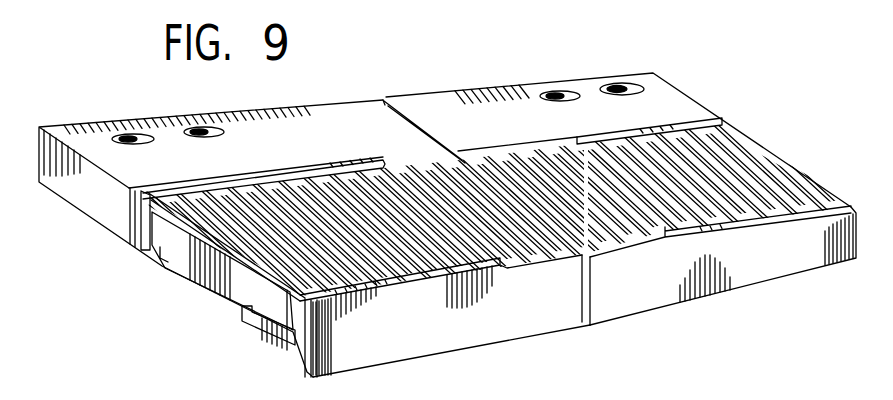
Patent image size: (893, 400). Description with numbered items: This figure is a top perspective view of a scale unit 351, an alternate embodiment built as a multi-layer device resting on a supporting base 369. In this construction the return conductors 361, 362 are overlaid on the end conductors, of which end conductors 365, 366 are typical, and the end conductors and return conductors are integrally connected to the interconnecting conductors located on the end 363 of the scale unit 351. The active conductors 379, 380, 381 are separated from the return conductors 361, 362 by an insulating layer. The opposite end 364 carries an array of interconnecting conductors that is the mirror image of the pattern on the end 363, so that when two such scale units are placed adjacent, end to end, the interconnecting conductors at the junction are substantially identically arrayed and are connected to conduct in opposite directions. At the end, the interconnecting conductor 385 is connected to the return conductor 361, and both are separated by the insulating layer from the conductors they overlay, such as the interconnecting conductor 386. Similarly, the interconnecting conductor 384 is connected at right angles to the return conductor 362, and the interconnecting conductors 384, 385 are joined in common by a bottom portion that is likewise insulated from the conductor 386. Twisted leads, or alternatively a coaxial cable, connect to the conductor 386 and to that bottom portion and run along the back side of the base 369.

The scale unit 351 is at (518, 76).
The return conductor 361 is at (317, 163).
The return conductor 362 is at (413, 278).
The end 363 is at (85, 195).
The end 364 is at (671, 84).
The end conductor 365 is at (513, 142).
The end conductor 366 is at (553, 248).
The supporting base 369 is at (731, 268).
The active conductor 379 is at (230, 247).
The active conductor 380 is at (197, 192).
The active conductor 381 is at (238, 200).
The interconnecting conductor 384 is at (328, 350).
The interconnecting conductor 385 is at (142, 225).
The interconnecting conductor 386 is at (232, 298).